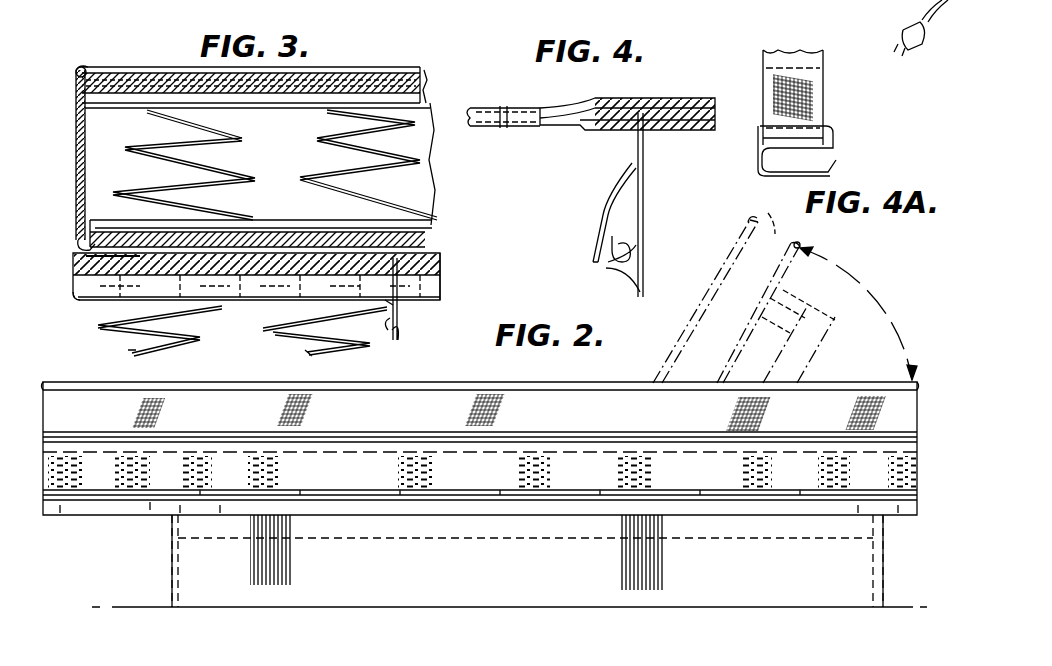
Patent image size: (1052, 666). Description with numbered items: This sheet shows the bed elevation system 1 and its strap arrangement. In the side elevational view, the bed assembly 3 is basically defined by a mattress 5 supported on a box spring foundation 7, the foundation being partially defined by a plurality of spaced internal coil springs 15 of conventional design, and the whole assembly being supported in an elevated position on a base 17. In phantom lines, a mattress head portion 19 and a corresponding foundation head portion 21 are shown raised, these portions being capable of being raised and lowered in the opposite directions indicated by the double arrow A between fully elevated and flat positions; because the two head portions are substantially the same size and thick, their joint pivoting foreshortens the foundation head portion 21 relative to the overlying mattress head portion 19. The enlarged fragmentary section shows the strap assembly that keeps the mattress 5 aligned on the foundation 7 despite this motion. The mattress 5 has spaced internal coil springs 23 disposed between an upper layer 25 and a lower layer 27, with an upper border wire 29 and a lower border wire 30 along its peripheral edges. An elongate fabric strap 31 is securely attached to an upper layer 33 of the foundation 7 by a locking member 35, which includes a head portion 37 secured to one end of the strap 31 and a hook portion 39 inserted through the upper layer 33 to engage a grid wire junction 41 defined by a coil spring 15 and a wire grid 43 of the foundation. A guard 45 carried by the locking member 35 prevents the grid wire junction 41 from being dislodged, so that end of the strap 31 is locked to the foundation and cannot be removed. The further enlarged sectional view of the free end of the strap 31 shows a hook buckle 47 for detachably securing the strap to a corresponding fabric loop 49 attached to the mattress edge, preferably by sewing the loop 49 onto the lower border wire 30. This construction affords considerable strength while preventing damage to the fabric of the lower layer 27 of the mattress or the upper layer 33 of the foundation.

In FIG. 2, the bed elevation system 1 is at (565, 383).
In FIG. 2, the bed assembly 3 is at (632, 382).
In FIG. 3, the mattress 5 is at (330, 92).
In FIG. 2, the mattress 5 is at (415, 402).
In FIG. 2, the box spring foundation 7 is at (255, 460).
In FIG. 3, the internal coil springs 15 is at (200, 337).
In FIG. 2, the internal coil springs 15 is at (392, 468).
In FIG. 2, the base 17 is at (845, 570).
In FIG. 2, the mattress head portion 19 is at (744, 283).
In FIG. 2, the foundation head portion 21 is at (790, 294).
In FIG. 3, the internal coil springs 23 is at (312, 168).
In FIG. 3, the upper layer 25 is at (430, 90).
In FIG. 3, the lower layer 27 is at (426, 234).
In FIG. 3, the upper border wire 29 is at (72, 76).
In FIG. 3, the lower border wire 30 is at (76, 240).
In FIG. 4, the strap 31 is at (600, 97).
In FIG. 4A, the strap 31 is at (818, 90).
In FIG. 3, the upper layer 33 is at (442, 287).
In FIG. 4, the locking member 35 is at (652, 190).
In FIG. 4, the head portion 37 is at (655, 126).
In FIG. 4, the hook portion 39 is at (610, 258).
In FIG. 3, the grid wire junction 41 is at (390, 330).
In FIG. 3, the wire grid 43 is at (422, 302).
In FIG. 4, the guard 45 is at (596, 225).
In FIG. 3, the hook buckle 47 is at (78, 280).
In FIG. 4A, the hook buckle 47 is at (822, 166).
In FIG. 3, the fabric loop 49 is at (84, 258).
In FIG. 2, the double arrow A is at (888, 312).